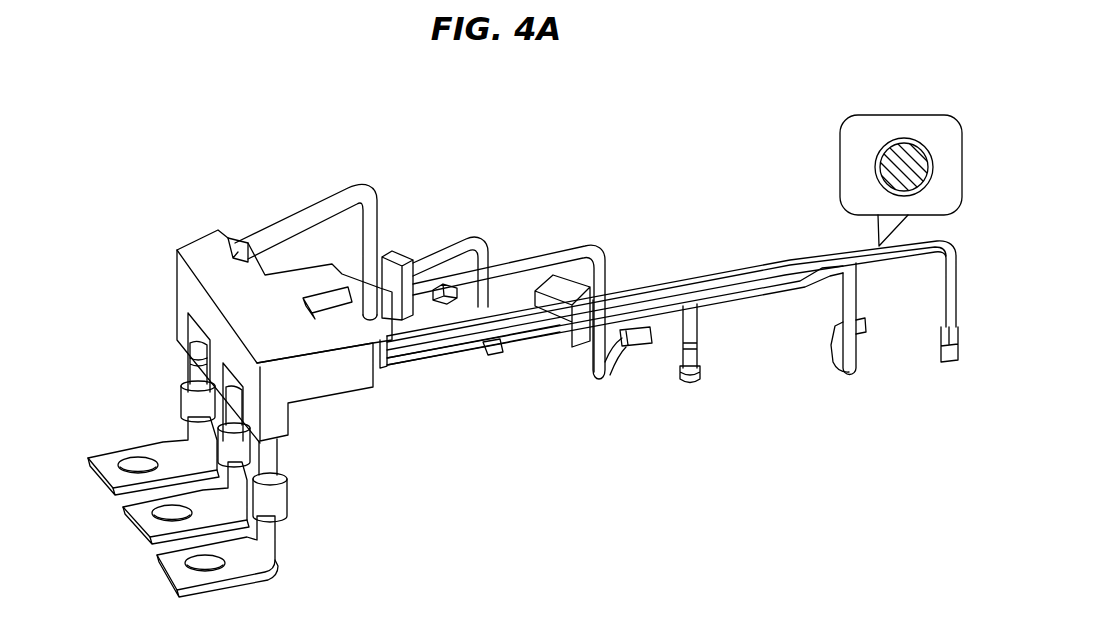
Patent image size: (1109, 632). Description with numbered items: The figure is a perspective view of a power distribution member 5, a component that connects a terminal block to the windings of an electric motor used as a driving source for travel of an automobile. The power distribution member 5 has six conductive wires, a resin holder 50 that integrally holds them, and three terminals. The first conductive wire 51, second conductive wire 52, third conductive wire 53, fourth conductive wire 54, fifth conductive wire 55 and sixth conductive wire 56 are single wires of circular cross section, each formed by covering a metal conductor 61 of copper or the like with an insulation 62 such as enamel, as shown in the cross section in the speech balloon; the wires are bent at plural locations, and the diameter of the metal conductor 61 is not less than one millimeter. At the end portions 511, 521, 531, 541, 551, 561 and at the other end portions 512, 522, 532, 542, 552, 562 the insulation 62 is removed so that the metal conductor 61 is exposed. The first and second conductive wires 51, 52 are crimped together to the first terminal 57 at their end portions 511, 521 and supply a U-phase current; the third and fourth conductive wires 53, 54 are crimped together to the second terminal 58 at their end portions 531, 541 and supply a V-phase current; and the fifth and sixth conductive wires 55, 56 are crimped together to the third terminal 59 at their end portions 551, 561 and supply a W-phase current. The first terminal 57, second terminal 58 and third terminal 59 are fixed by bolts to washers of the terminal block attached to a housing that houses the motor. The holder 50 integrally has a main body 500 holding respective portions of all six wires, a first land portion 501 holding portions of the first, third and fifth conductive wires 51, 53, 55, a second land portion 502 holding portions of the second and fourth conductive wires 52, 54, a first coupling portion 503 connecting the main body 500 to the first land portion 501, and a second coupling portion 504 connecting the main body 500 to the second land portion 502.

The power distribution member 5 is at (673, 161).
The holder 50 is at (177, 272).
The main body 500 is at (203, 250).
The first land portion 501 is at (577, 340).
The second land portion 502 is at (388, 257).
The first coupling portion 503 is at (477, 343).
The second coupling portion 504 is at (362, 313).
The first conductive wire 51 is at (733, 275).
The end portion 511 is at (271, 472).
The other end portion 512 is at (949, 367).
The second conductive wire 52 is at (533, 258).
The end portion 521 is at (262, 458).
The other end portion 522 is at (643, 346).
The third conductive wire 53 is at (742, 297).
The end portion 531 is at (233, 418).
The other end portion 532 is at (862, 327).
The fourth conductive wire 54 is at (427, 267).
The end portion 541 is at (193, 389).
The other end portion 542 is at (491, 352).
The fifth conductive wire 55 is at (692, 329).
The end portion 551 is at (200, 364).
The other end portion 552 is at (688, 381).
The sixth conductive wire 56 is at (354, 192).
The end portion 561 is at (190, 345).
The other end portion 562 is at (450, 303).
The first terminal 57 is at (168, 560).
The second terminal 58 is at (133, 512).
The third terminal 59 is at (105, 460).
The metal conductor 61 is at (893, 153).
The insulation 62 is at (907, 140).